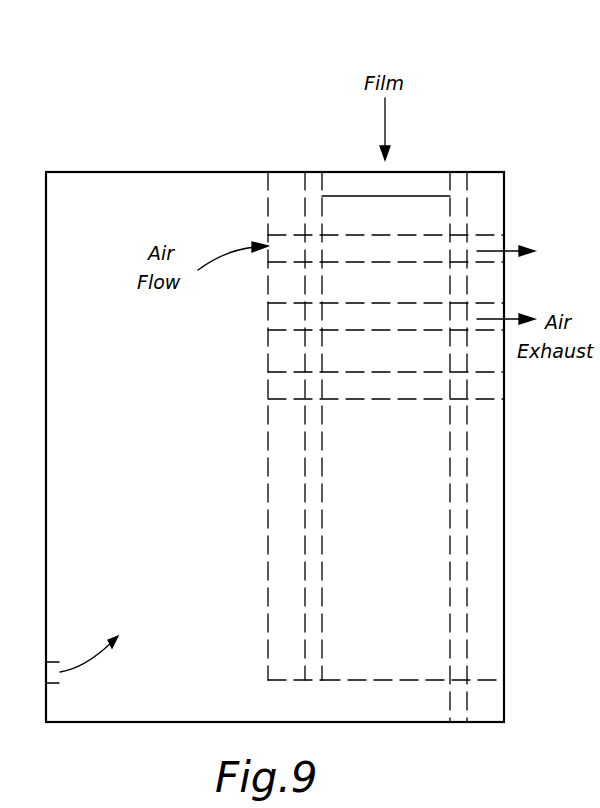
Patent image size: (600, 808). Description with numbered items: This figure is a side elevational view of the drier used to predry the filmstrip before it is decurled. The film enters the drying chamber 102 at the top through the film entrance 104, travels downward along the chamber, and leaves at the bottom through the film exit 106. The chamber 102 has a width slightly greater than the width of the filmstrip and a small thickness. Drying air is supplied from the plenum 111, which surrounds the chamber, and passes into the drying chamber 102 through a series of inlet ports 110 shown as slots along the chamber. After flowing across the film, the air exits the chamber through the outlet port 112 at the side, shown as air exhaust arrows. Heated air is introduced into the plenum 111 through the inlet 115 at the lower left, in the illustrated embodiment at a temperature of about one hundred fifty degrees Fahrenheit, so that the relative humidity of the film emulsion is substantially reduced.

The drying chamber 102 is at (425, 186).
The film entrance 104 is at (336, 166).
The film exit 106 is at (410, 723).
The inlet ports 110 is at (268, 258).
The plenum 111 is at (206, 508).
The outlet port 112 is at (505, 245).
The inlet 115 is at (63, 678).